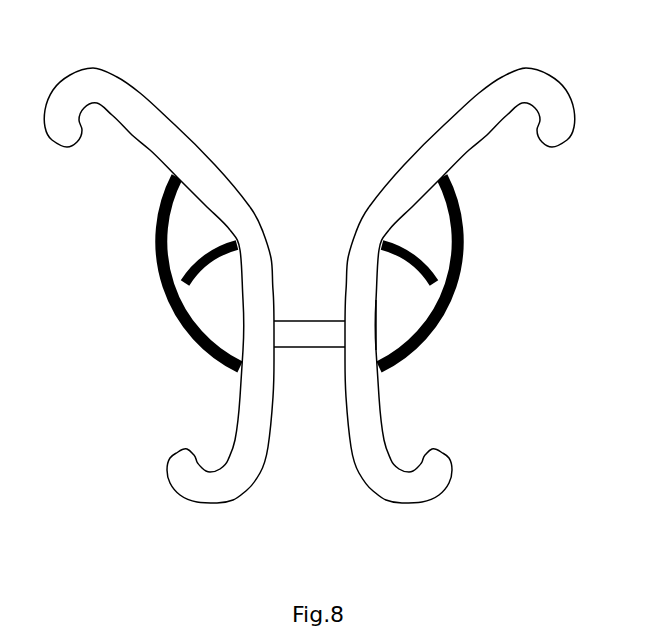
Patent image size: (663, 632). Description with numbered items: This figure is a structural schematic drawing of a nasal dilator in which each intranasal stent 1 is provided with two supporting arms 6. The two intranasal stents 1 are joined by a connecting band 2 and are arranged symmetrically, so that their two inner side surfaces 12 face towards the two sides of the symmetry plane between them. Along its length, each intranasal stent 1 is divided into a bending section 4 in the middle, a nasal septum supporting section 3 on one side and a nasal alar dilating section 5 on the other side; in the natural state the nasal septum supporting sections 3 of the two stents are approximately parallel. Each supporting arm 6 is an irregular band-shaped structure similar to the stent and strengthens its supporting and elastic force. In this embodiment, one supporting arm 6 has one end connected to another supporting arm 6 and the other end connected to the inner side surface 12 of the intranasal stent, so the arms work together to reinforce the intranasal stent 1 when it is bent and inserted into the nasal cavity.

The intranasal stent 1 is at (309, 285).
The connecting band 2 is at (283, 323).
The nasal septum supporting section 3 is at (257, 412).
The bending section 4 is at (257, 238).
The nasal alar dilating section 5 is at (162, 130).
The supporting arm 6 is at (178, 308).
The inner side surface of intranasal stent 12 is at (377, 297).